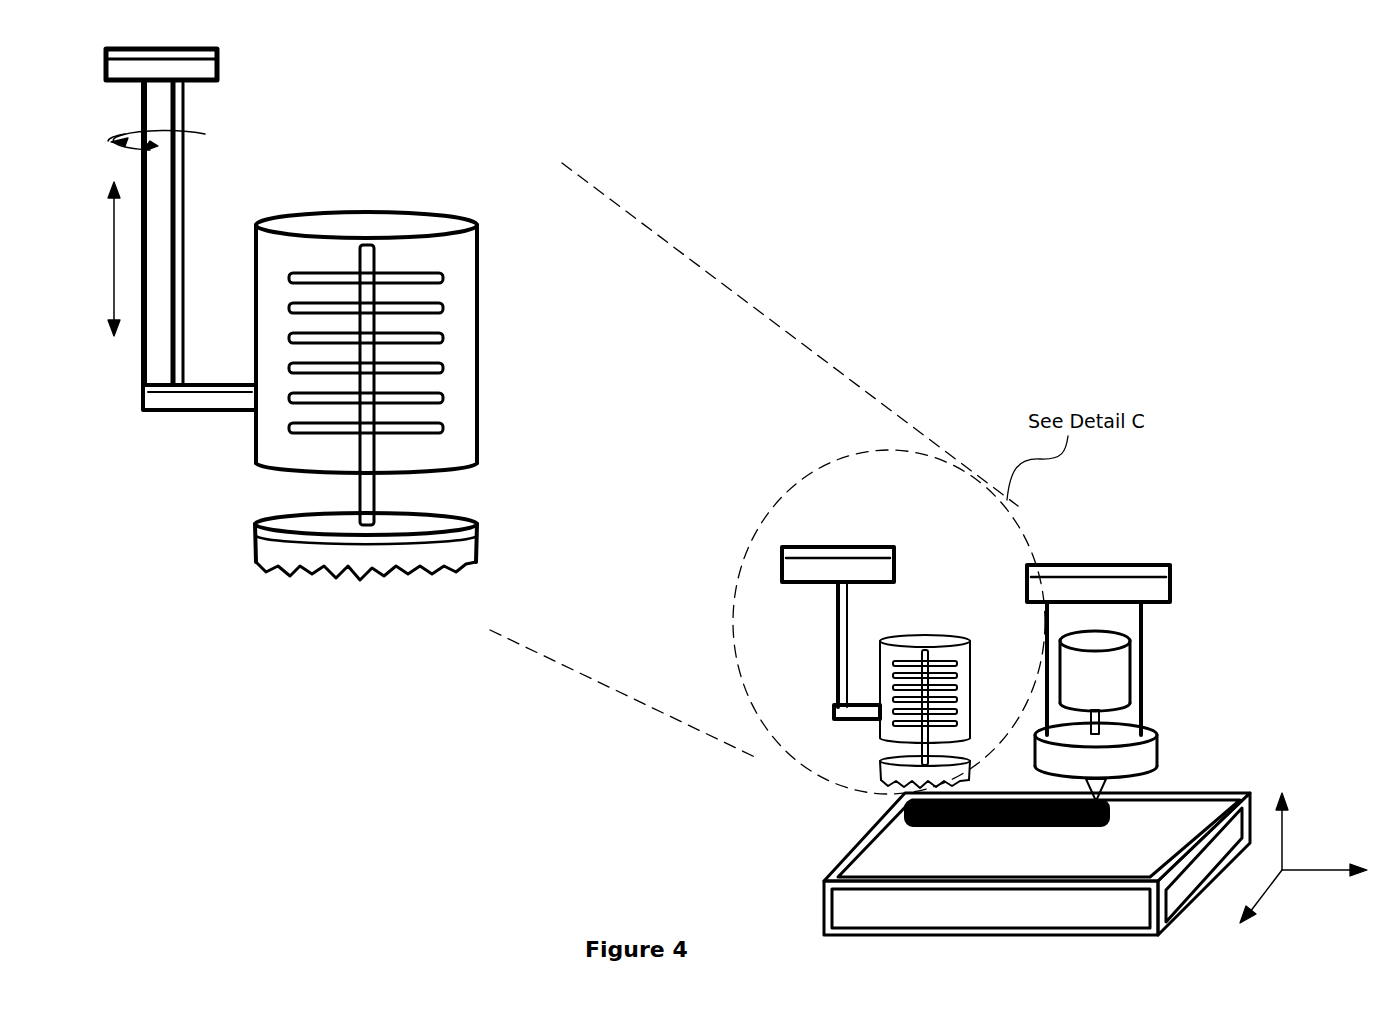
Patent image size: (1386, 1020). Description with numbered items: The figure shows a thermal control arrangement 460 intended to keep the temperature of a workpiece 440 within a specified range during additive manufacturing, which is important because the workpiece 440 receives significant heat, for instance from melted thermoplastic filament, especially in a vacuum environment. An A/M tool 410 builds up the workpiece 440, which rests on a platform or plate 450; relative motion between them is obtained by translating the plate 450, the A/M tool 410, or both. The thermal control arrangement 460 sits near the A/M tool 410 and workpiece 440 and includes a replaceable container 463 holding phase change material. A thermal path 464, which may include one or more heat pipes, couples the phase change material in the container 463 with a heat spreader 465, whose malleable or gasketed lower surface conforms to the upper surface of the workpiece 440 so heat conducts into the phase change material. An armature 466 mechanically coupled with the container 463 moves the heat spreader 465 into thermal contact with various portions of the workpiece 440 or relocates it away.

The A/M tool 410 is at (1182, 658).
The workpiece 440 is at (1150, 828).
The plate 450 is at (862, 878).
The thermal control arrangement 460 is at (538, 418).
The container 463 is at (460, 279).
The thermal path 464 is at (368, 489).
The heat spreader 465 is at (455, 551).
The armature 466 is at (185, 178).